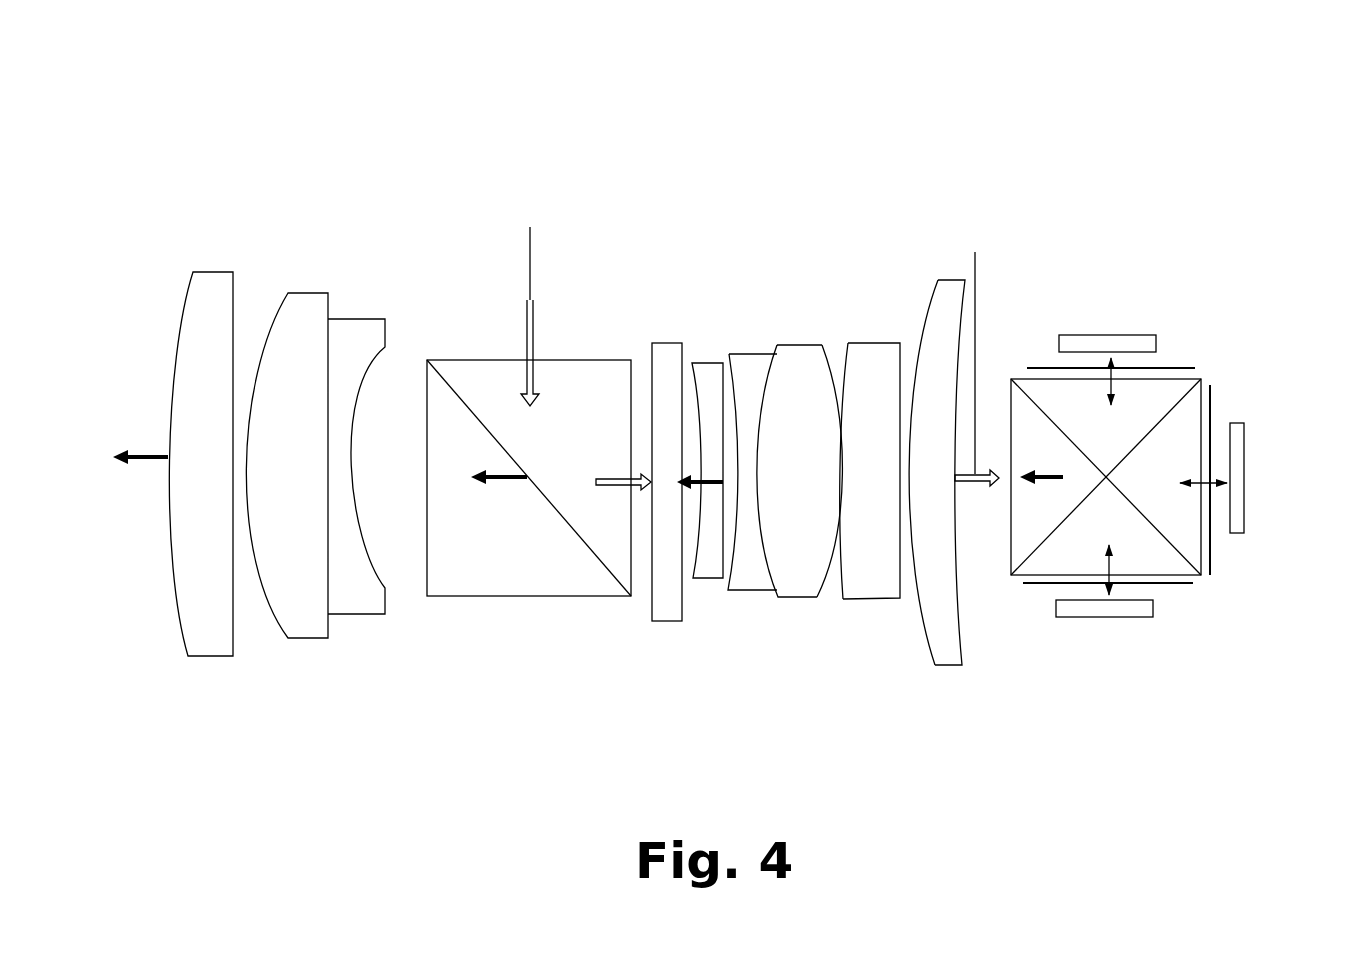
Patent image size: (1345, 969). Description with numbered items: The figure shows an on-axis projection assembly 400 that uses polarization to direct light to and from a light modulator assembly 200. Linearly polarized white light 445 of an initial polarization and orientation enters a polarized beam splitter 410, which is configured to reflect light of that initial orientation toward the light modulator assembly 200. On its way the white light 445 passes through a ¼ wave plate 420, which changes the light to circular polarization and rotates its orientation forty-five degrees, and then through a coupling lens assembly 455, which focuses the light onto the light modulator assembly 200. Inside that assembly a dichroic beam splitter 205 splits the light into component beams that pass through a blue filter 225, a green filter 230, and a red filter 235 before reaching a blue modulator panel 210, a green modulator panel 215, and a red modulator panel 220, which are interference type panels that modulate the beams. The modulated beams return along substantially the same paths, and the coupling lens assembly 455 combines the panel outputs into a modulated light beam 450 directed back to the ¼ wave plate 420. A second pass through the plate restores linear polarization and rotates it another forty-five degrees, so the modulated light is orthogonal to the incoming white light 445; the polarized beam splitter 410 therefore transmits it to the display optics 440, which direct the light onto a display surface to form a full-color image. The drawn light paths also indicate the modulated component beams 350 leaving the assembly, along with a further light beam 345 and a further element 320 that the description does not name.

The on-axis projection assembly 400 is at (582, 83).
The display optics 440 is at (265, 257).
The modulated component beams 350 is at (142, 452).
The polarized beam splitter 410 is at (528, 596).
The linearly polarized white light 445 is at (532, 297).
The light beam 345 is at (640, 493).
The ¼ wave plate 420 is at (662, 343).
The lens 320 is at (694, 488).
The coupling lens assembly 455 is at (785, 280).
The light modulator assembly 200 is at (1088, 277).
The dichroic beam splitter 205 is at (1010, 577).
The modulated light beam 450 is at (1036, 476).
The red filter 235 is at (1176, 368).
The blue filter 225 is at (1177, 584).
The green filter 230 is at (1212, 398).
The red modulator panel 220 is at (1106, 335).
The blue modulator panel 210 is at (1100, 618).
The green modulator panel 215 is at (1245, 478).